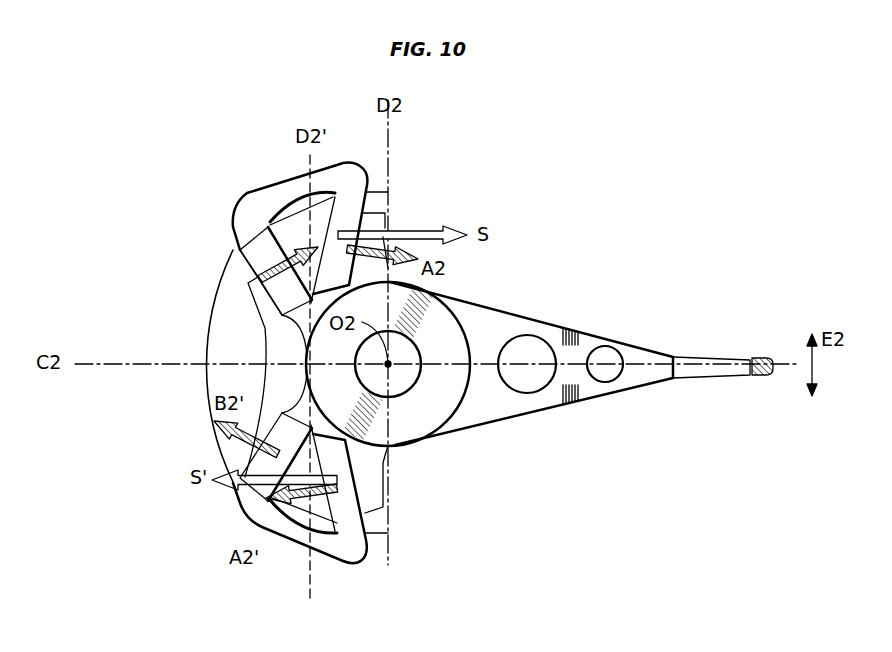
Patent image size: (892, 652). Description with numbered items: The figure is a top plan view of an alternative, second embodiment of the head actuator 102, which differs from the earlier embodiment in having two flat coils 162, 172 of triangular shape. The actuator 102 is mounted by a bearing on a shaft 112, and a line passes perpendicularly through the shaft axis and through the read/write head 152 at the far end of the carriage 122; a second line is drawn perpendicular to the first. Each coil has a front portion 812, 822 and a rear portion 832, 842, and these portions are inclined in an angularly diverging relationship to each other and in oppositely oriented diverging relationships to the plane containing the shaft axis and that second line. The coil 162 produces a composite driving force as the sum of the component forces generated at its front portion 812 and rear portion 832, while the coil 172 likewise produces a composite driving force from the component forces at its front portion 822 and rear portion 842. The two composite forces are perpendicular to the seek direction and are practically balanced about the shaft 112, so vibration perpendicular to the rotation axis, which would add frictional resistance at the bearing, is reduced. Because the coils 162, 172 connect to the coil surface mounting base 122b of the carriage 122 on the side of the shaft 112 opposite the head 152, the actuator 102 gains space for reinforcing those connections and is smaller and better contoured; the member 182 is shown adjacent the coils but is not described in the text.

The actuator 102 is at (578, 306).
The shaft 112 is at (403, 377).
The carriage 122 is at (397, 421).
The coil surface mounting base 122b is at (277, 350).
The read/write head 152 is at (774, 380).
The flat coil 162 is at (260, 182).
The flat coil 172 is at (290, 560).
The base member 182 is at (205, 293).
The front portion 812 is at (343, 212).
The front portion 822 is at (343, 510).
The rear portion 832 is at (242, 250).
The rear portion 842 is at (272, 517).